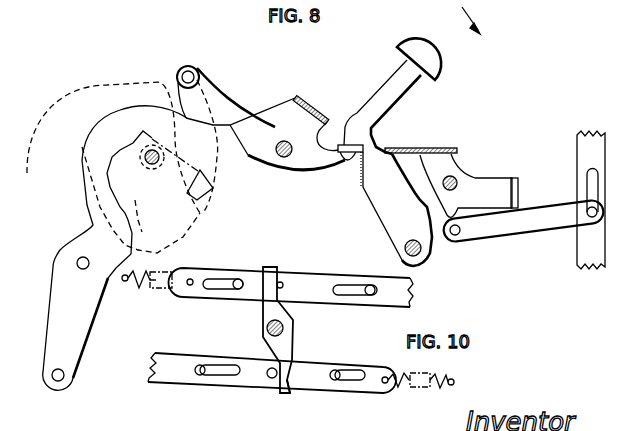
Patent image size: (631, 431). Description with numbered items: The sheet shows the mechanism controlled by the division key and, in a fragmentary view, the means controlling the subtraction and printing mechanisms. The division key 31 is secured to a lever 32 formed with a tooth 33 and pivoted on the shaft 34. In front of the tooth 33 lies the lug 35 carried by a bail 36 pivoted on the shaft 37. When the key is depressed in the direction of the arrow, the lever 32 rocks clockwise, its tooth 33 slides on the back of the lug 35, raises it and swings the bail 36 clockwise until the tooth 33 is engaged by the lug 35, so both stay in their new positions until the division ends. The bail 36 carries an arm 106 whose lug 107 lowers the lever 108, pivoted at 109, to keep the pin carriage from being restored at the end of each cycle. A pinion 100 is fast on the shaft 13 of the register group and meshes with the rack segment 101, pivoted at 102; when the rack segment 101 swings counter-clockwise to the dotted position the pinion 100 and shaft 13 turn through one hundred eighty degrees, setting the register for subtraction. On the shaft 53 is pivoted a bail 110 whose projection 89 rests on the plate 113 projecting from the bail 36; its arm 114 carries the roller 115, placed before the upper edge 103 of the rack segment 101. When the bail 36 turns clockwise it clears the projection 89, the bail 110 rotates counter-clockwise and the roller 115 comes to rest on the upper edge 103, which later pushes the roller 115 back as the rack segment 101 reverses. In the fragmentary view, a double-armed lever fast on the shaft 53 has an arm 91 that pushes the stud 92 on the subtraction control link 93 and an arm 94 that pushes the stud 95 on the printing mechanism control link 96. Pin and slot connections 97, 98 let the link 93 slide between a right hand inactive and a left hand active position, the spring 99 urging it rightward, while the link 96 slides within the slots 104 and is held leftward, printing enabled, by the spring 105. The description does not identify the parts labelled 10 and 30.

In FIG. 8, the frame 10 is at (180, 222).
In FIG. 8, the shaft 13 is at (148, 164).
In FIG. 8, the lever lower arm 30 is at (290, 351).
In FIG. 8, the division key 31 is at (425, 58).
In FIG. 8, the lever 32 is at (378, 105).
In FIG. 8, the tooth 33 is at (379, 162).
In FIG. 8, the shaft 34 is at (423, 258).
In FIG. 8, the lug 35 is at (410, 150).
In FIG. 8, the bail 36 is at (455, 147).
In FIG. 8, the shaft 37 is at (457, 180).
In FIG. 8, the shaft 53 is at (283, 157).
In FIG. 8, the projection 89 is at (352, 161).
In FIG. 10, the arm 91 is at (285, 382).
In FIG. 10, the stud 92 is at (272, 379).
In FIG. 10, the subtraction control link 93 is at (158, 372).
In FIG. 8, the arm 94 is at (267, 277).
In FIG. 8, the stud 95 is at (283, 285).
In FIG. 8, the printing mechanism control link 96 is at (340, 280).
In FIG. 10, the pin 97 is at (200, 375).
In FIG. 10, the slot 98 is at (230, 376).
In FIG. 10, the spring 99 is at (420, 386).
In FIG. 8, the pinion 100 is at (163, 164).
In FIG. 8, the rack segment 101 is at (248, 157).
In FIG. 8, the pivot 102 is at (77, 261).
In FIG. 8, the upper edge 103 is at (217, 123).
In FIG. 8, the slots 104 is at (207, 290).
In FIG. 8, the spring 105 is at (152, 290).
In FIG. 8, the arm 106 is at (500, 187).
In FIG. 8, the lug 107 is at (518, 192).
In FIG. 8, the lever 108 is at (553, 220).
In FIG. 8, the pivot 109 is at (460, 233).
In FIG. 8, the bail 110 is at (318, 110).
In FIG. 8, the plate 113 is at (340, 153).
In FIG. 8, the arm 114 is at (217, 107).
In FIG. 8, the roller 115 is at (190, 75).